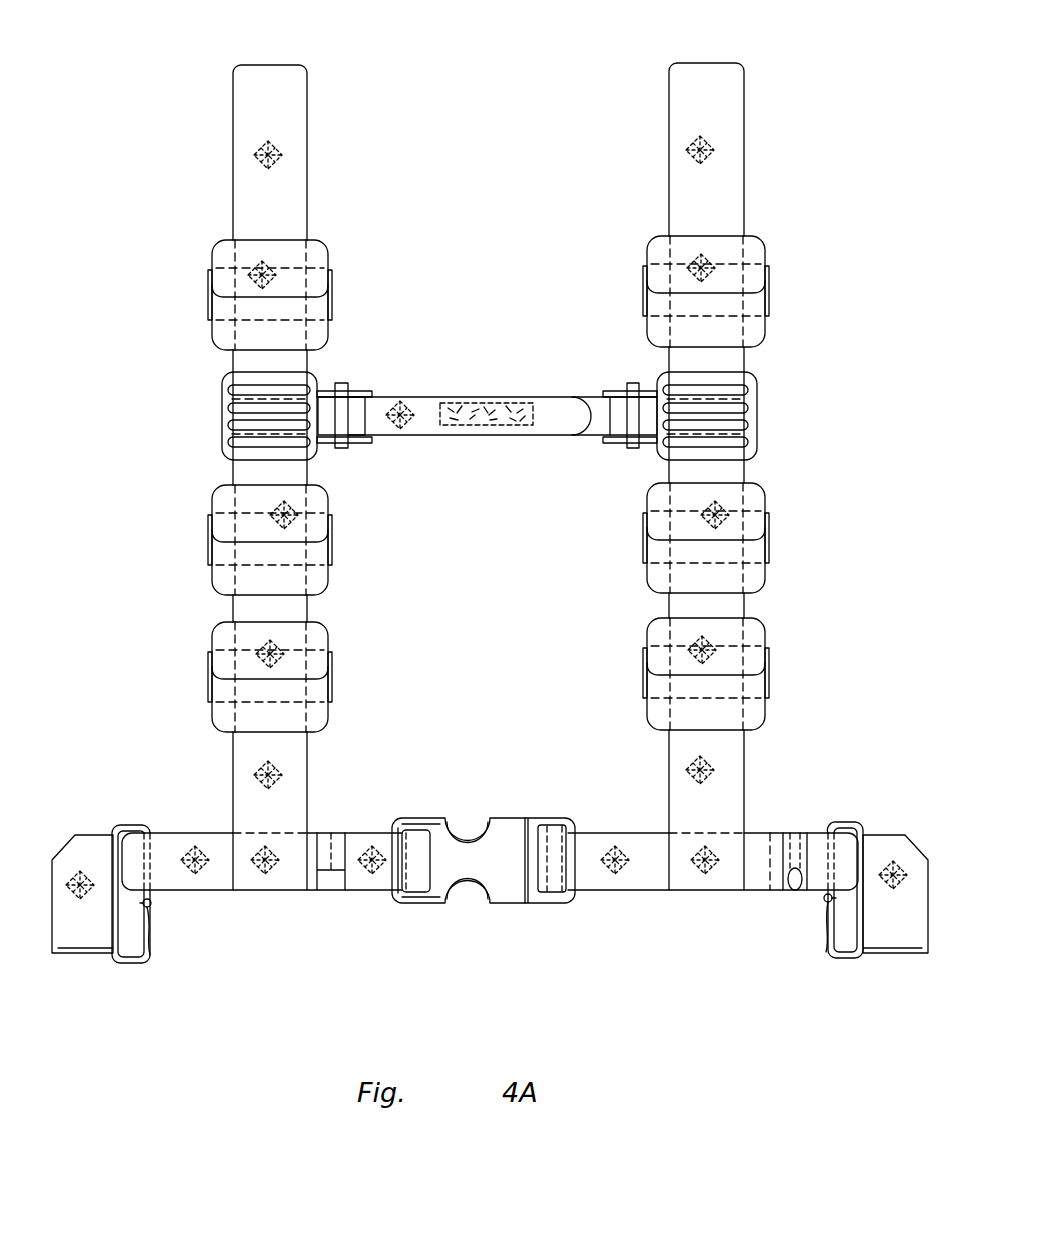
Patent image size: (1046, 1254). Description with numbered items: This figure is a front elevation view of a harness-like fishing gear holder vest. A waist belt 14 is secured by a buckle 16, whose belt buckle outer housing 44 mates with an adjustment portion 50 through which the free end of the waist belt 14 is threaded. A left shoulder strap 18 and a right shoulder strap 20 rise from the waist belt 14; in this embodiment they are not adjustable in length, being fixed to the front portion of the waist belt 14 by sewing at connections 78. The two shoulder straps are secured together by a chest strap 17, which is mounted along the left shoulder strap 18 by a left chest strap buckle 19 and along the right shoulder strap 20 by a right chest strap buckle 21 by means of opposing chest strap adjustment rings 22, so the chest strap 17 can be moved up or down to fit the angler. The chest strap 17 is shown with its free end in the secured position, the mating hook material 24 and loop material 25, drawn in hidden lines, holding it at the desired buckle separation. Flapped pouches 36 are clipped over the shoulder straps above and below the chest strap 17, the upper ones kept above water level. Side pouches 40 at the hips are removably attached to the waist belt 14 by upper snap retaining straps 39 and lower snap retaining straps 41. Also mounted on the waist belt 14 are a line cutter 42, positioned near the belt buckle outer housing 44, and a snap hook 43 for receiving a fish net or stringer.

The waist belt 14 is at (490, 860).
The buckle 16 is at (541, 922).
The chest strap 17 is at (479, 434).
The left shoulder strap 18 is at (725, 112).
The left chest strap buckle 19 is at (757, 395).
The right shoulder strap 20 is at (290, 125).
The right chest strap buckle 21 is at (225, 390).
The chest strap adjustment rings 22 is at (349, 387).
The hook material 24 is at (504, 365).
The loop material 25 is at (445, 440).
The flapped pouches 36 is at (330, 332).
The upper snap retaining straps 39 is at (147, 825).
The side pouches 40 is at (78, 945).
The lower snap retaining straps 41 is at (140, 963).
The line cutter 42 is at (327, 893).
The snap hook 43 is at (792, 893).
The belt buckle outer housing 44 is at (448, 876).
The adjustment portion 50 is at (552, 920).
The connections 78 is at (290, 892).